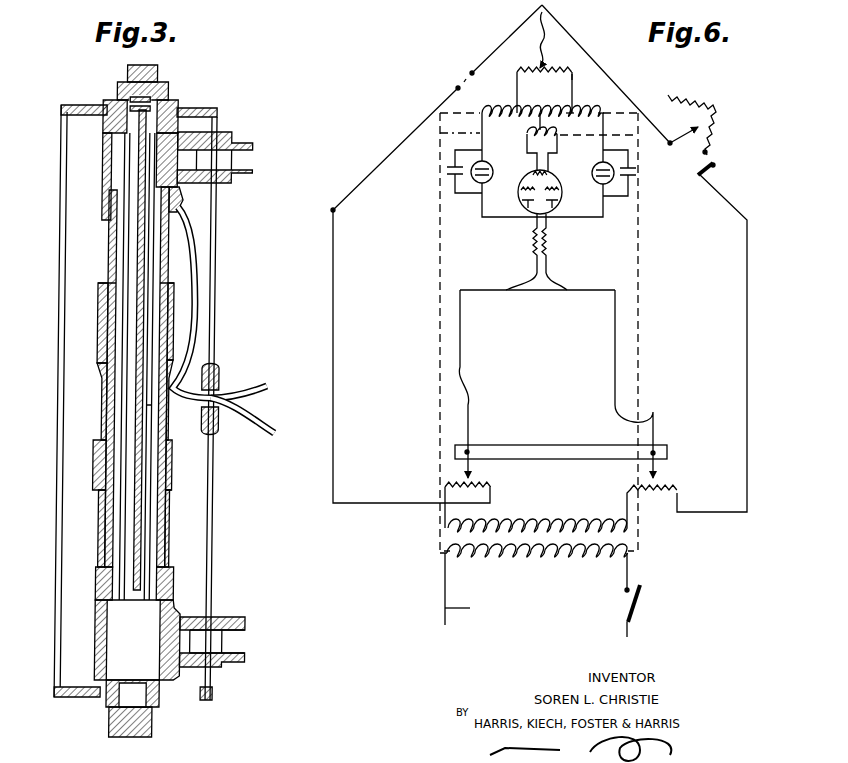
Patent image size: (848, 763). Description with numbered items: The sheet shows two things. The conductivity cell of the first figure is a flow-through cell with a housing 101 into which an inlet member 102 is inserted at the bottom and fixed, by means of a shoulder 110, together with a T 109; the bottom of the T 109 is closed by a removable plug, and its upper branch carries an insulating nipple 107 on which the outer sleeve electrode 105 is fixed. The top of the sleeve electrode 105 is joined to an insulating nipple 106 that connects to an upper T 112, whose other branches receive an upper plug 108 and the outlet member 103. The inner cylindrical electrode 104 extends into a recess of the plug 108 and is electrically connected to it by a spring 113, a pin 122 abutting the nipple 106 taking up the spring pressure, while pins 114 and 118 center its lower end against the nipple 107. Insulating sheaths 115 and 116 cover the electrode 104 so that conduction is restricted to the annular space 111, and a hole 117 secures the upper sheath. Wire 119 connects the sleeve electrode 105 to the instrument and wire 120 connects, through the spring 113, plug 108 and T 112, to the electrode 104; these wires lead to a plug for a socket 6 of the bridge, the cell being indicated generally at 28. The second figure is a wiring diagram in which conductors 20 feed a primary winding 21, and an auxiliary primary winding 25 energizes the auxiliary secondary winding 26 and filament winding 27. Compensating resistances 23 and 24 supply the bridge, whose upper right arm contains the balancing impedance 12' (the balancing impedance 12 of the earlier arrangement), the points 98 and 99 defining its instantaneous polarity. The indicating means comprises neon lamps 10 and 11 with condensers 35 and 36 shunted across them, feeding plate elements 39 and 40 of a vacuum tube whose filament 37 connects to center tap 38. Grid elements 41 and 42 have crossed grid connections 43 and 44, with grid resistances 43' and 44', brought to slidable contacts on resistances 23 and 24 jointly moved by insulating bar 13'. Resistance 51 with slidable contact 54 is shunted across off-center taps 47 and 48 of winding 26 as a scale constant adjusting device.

In FIG. 3, the balancing impedance 12 is at (251, 10).
In FIG. 3, the housing 101 is at (218, 492).
In FIG. 3, the upper T 112 is at (182, 112).
In FIG. 3, the upper plug 108 is at (165, 86).
In FIG. 3, the spring 113 is at (120, 98).
In FIG. 3, the outlet member 103 is at (253, 160).
In FIG. 3, the pin 122 is at (182, 192).
In FIG. 3, the insulating nipple 106 is at (108, 262).
In FIG. 3, the hole 117 is at (140, 207).
In FIG. 3, the inner cylindrical electrode 104 is at (138, 405).
In FIG. 3, the insulating sheath 115 is at (105, 343).
In FIG. 3, the outer sleeve electrode 105 is at (107, 388).
In FIG. 3, the insulating sheath 116 is at (105, 467).
In FIG. 3, the insulating nipple 107 is at (178, 545).
In FIG. 3, the annular space 111 is at (152, 405).
In FIG. 3, the pin 114 is at (108, 570).
In FIG. 3, the pin 118 is at (134, 590).
In FIG. 3, the shoulder 110 is at (215, 616).
In FIG. 3, the inlet member 102 is at (251, 641).
In FIG. 3, the T 109 is at (175, 665).
In FIG. 3, the wire 119 is at (252, 420).
In FIG. 3, the wire 120 is at (230, 386).
In FIG. 3, the thermal unit 28 is at (231, 301).
In FIG. 6, the point 98 is at (334, 211).
In FIG. 6, the socket 6 is at (430, 76).
In FIG. 6, the point 99 is at (746, 221).
In FIG. 6, the balancing impedance 12' is at (714, 122).
In FIG. 6, the off-center tap 47 is at (510, 112).
In FIG. 6, the off-center tap 48 is at (570, 112).
In FIG. 6, the center tap 38 is at (540, 77).
In FIG. 6, the slidable contact 54 is at (545, 62).
In FIG. 6, the resistance 51 is at (573, 75).
In FIG. 6, the auxiliary secondary winding 26 is at (602, 112).
In FIG. 6, the neon lamp 10 is at (487, 164).
In FIG. 6, the condenser 35 is at (449, 178).
In FIG. 6, the neon lamp 11 is at (608, 190).
In FIG. 6, the condenser 36 is at (636, 179).
In FIG. 6, the filament winding 27 is at (558, 135).
In FIG. 6, the filament 37 is at (546, 175).
In FIG. 6, the grid element 41 is at (524, 189).
In FIG. 6, the grid element 42 is at (558, 191).
In FIG. 6, the plate element 39 is at (526, 206).
In FIG. 6, the plate element 40 is at (554, 206).
In FIG. 6, the grid resistance 43' is at (512, 243).
In FIG. 6, the grid resistance 44' is at (571, 243).
In FIG. 6, the grid connection 43 is at (537, 375).
In FIG. 6, the grid connection 44 is at (599, 375).
In FIG. 6, the insulating bar 13' is at (588, 449).
In FIG. 6, the compensating resistance 23 is at (490, 490).
In FIG. 6, the compensating resistance 24 is at (678, 491).
In FIG. 6, the auxiliary primary winding 25 is at (630, 531).
In FIG. 6, the primary winding 21 is at (627, 558).
In FIG. 6, the conductors 20 is at (625, 626).